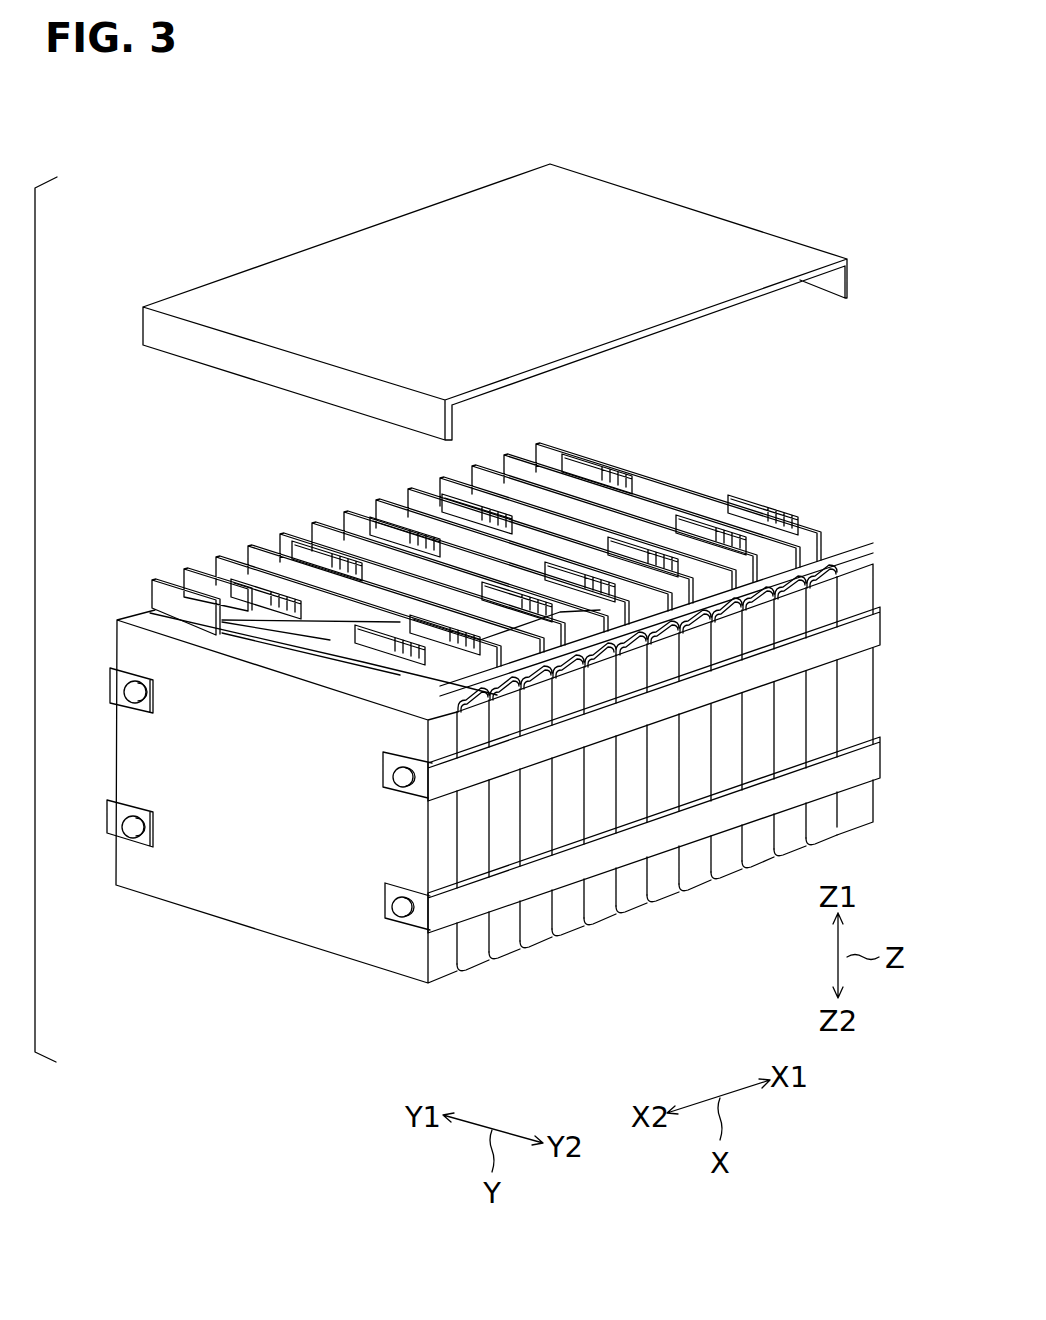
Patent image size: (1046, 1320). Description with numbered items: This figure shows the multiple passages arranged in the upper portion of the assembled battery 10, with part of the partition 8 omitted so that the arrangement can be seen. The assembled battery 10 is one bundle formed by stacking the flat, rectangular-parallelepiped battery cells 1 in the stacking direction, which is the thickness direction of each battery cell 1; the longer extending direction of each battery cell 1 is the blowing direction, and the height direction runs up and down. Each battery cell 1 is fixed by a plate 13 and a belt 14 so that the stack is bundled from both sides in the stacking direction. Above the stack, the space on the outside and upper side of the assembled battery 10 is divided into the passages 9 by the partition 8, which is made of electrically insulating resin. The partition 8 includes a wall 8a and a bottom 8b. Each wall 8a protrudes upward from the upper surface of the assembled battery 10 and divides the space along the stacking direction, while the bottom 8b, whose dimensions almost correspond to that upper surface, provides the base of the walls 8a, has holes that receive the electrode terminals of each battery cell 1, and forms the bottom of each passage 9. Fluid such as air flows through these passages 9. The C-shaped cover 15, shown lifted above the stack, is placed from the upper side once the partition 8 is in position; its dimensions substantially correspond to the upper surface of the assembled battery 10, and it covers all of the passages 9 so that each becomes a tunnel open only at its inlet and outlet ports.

The battery cell 1 is at (670, 903).
The partition 8 is at (514, 512).
The wall 8a is at (645, 500).
The bottom 8b is at (770, 572).
The passage 9 is at (644, 588).
The assembled battery 10 is at (892, 705).
The plate 13 is at (252, 913).
The belt 14 is at (108, 687).
The cover 15 is at (655, 207).